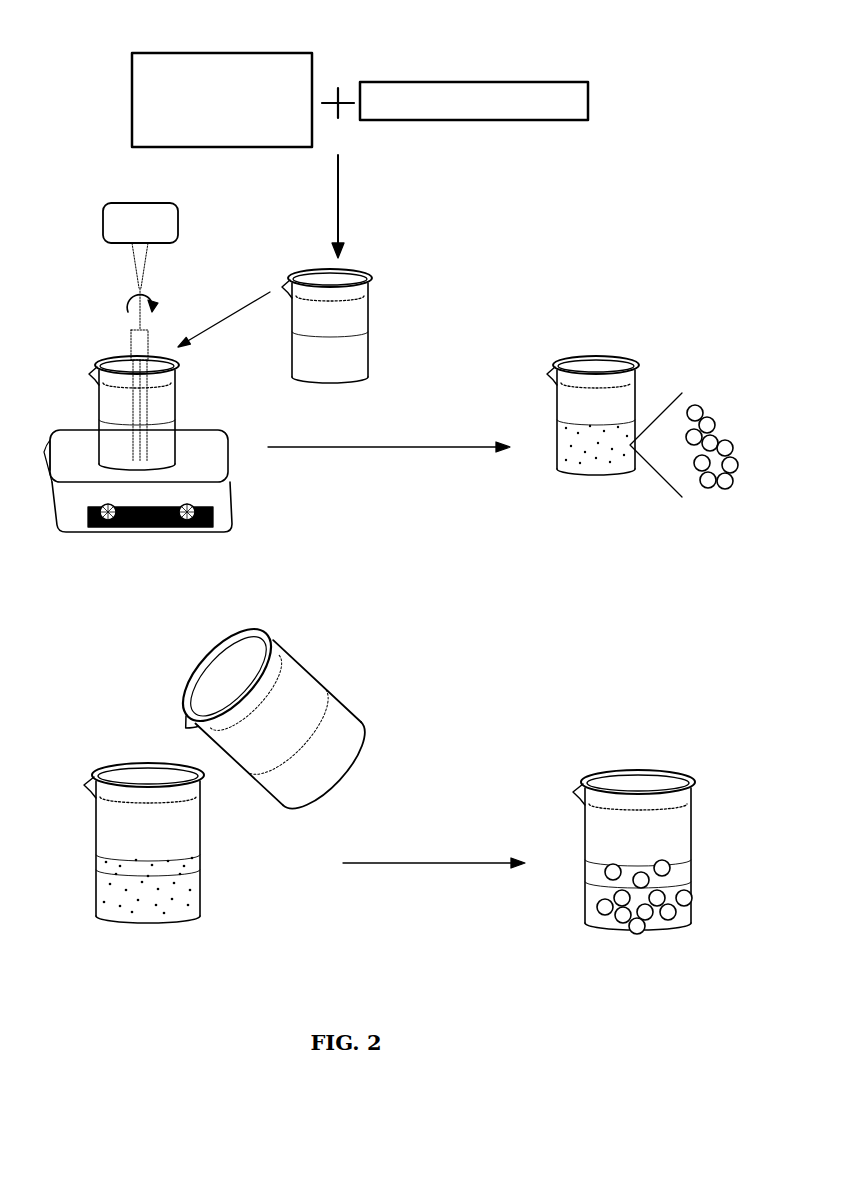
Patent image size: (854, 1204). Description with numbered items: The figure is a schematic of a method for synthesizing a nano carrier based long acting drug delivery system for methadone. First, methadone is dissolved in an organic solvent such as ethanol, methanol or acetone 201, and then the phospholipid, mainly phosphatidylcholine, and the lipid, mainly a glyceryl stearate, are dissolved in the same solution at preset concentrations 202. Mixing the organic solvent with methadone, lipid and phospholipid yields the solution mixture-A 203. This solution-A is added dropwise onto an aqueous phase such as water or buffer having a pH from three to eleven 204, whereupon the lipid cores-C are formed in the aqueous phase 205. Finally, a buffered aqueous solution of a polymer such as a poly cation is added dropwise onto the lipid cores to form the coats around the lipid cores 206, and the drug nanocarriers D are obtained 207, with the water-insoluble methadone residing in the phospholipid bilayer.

The methadone dissolved in organic solvent 201 is at (218, 52).
The phospholipid and lipid dissolution 202 is at (590, 100).
The solution mixture-A 203 is at (371, 305).
The dropwise addition of solution-A onto aqueous phase 204 is at (176, 405).
The lipid cores-C formed in aqueous phase 205 is at (598, 353).
The polymer coat formation around lipid cores 206 is at (302, 672).
The drug nanocarriers D 207 is at (694, 785).